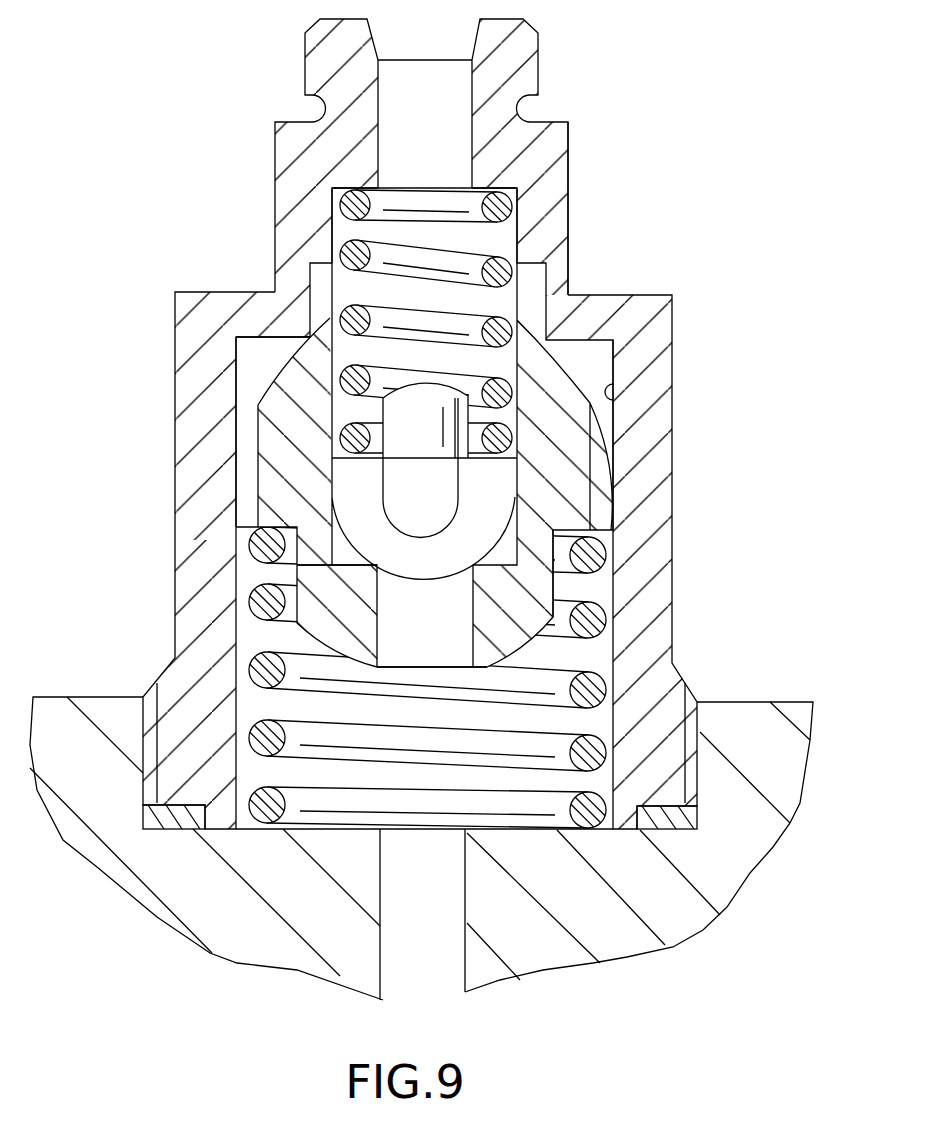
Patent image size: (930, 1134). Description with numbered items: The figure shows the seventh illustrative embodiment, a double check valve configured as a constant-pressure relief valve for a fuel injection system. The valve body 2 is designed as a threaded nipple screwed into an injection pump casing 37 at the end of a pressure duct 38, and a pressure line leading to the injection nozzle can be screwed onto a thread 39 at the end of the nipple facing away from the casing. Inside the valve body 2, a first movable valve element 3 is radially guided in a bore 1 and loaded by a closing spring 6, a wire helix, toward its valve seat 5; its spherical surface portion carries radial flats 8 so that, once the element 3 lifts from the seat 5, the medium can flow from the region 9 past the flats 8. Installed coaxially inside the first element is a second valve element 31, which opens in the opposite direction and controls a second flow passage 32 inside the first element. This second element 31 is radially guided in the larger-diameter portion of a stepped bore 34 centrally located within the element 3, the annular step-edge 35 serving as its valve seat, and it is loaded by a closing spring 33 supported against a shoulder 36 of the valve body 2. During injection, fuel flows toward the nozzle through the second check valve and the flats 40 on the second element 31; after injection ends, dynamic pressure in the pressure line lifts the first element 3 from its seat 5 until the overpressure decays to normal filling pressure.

The bore 1 is at (615, 399).
The valve body 2 is at (637, 347).
The movable valve element 3 is at (553, 479).
The valve seat 5 is at (572, 297).
The closing spring 6 is at (590, 829).
The flats 8 is at (253, 467).
The region 9 is at (258, 360).
The second valve element 31 is at (560, 598).
The second flow passage 32 is at (457, 642).
The closing spring 33 is at (513, 258).
The stepped bore 34 is at (383, 625).
The annular step-edge 35 is at (372, 565).
The shoulder 36 is at (383, 200).
The injection pump casing 37 is at (767, 762).
The pressure duct 38 is at (420, 960).
The thread 39 is at (537, 50).
The flats 40 is at (430, 492).